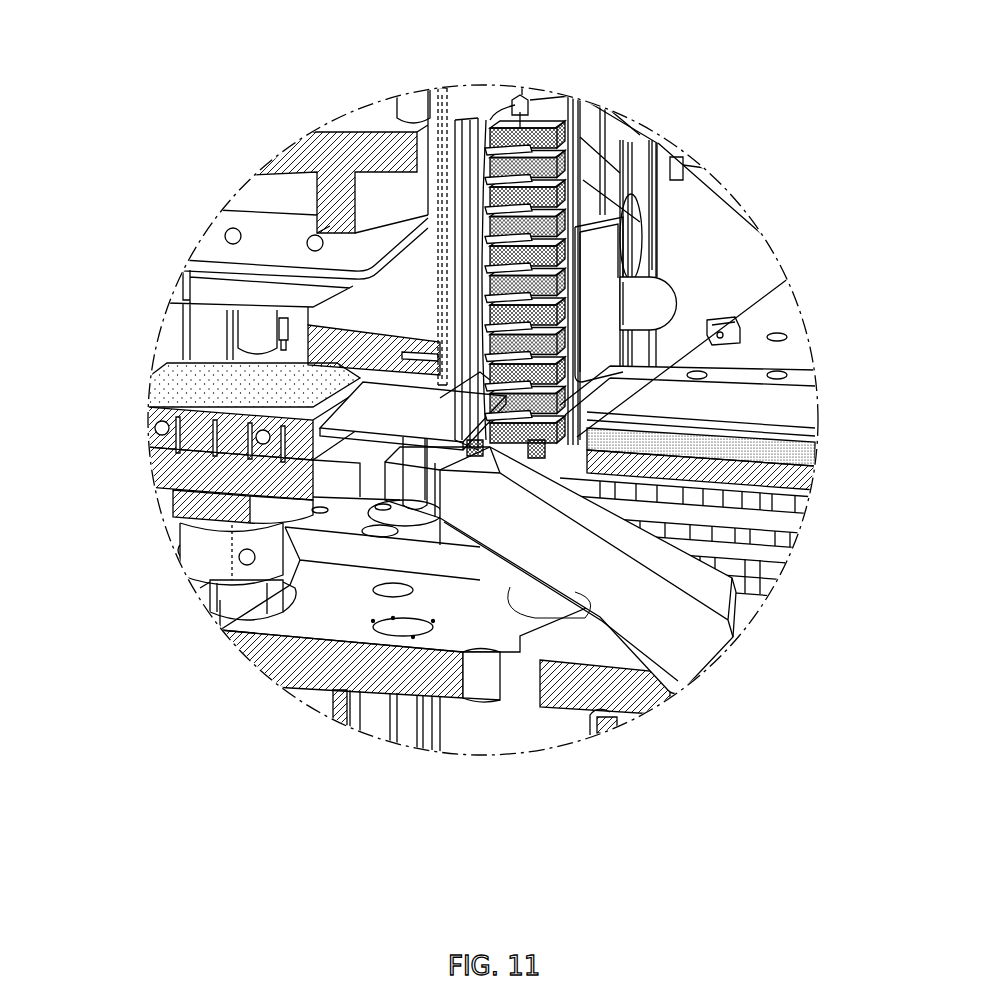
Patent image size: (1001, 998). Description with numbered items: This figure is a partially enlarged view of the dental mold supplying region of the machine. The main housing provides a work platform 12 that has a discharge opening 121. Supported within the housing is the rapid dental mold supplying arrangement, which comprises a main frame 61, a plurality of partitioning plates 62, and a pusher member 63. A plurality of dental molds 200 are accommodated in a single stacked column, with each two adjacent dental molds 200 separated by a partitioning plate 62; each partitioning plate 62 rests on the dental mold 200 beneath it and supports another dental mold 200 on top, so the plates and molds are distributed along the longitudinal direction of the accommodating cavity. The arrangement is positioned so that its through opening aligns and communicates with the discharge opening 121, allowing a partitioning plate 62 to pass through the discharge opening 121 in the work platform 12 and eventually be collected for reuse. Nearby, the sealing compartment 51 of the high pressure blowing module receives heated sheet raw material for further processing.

The work platform 12 is at (337, 608).
The discharge opening 121 is at (510, 468).
The sealing compartment 51 is at (168, 351).
The main frame 61 is at (597, 197).
The partitioning plate 62 is at (487, 130).
The pusher member 63 is at (773, 450).
The dental mold 200 is at (573, 100).